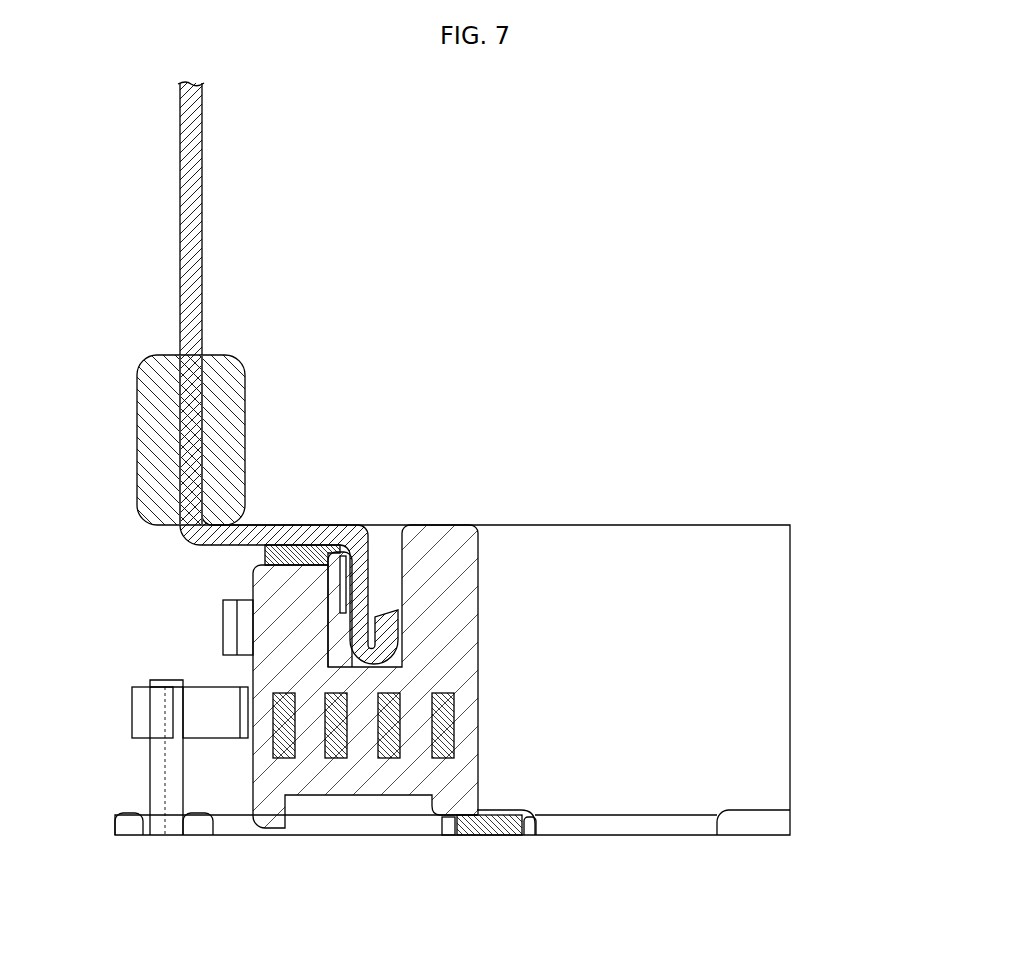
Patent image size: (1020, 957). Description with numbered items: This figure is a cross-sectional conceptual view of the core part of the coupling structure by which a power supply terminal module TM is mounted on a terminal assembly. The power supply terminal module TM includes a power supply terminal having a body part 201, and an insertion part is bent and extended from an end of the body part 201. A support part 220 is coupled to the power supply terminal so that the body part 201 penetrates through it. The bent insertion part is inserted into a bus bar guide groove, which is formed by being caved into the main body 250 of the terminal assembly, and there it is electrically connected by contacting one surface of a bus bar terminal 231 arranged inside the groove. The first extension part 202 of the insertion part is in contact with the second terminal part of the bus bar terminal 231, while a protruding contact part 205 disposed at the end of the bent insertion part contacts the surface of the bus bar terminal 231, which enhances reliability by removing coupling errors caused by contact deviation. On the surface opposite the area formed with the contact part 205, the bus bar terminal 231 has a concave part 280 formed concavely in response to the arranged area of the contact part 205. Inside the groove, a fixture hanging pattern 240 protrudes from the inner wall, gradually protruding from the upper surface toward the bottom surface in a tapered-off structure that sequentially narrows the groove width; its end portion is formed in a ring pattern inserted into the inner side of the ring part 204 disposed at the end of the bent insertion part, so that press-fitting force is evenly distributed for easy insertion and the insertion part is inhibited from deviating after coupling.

The power supply terminal module TM is at (157, 244).
The body part 201 is at (288, 504).
The first extension part 202 is at (298, 535).
The ring part 204 is at (372, 655).
The contact part 205 is at (333, 575).
The support part 220 is at (137, 433).
The bus bar terminal 231 is at (350, 633).
The fixture hanging pattern 240 is at (383, 567).
The main body 250 is at (790, 675).
The concave part 280 is at (367, 597).